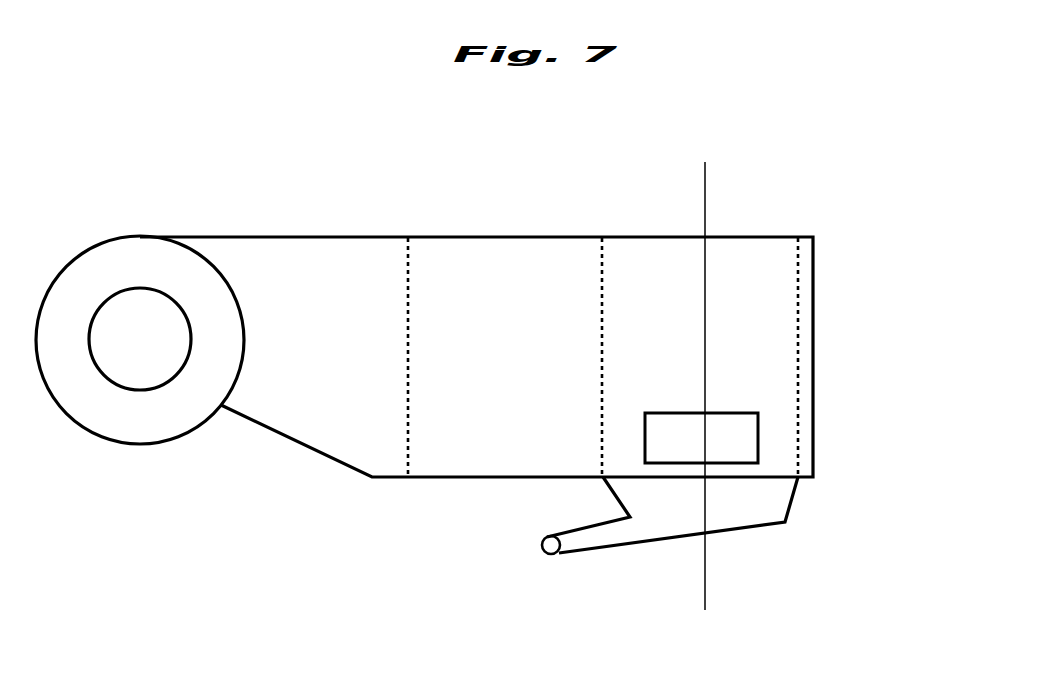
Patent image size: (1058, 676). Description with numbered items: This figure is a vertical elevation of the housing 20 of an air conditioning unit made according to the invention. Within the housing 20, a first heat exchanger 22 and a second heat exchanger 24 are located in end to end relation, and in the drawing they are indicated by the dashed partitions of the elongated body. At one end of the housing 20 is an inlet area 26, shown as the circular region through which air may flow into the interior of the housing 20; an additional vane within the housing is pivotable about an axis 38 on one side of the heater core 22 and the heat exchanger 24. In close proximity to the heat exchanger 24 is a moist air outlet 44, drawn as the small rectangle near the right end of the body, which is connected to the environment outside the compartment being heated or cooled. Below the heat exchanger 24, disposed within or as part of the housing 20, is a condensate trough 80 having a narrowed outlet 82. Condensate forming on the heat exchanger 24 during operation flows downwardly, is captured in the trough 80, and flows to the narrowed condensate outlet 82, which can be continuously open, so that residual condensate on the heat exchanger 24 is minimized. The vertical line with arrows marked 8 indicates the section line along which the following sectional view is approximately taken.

The housing 20 is at (367, 234).
The first heat exchanger 22 is at (488, 283).
The second heat exchanger 24 is at (655, 270).
The inlet area 26 is at (147, 363).
The axis 38 is at (138, 265).
The moist air outlet 44 is at (725, 430).
The condensate trough 80 is at (795, 505).
The narrowed condensate outlet 82 is at (551, 554).
The section line 8- 8 is at (668, 199).